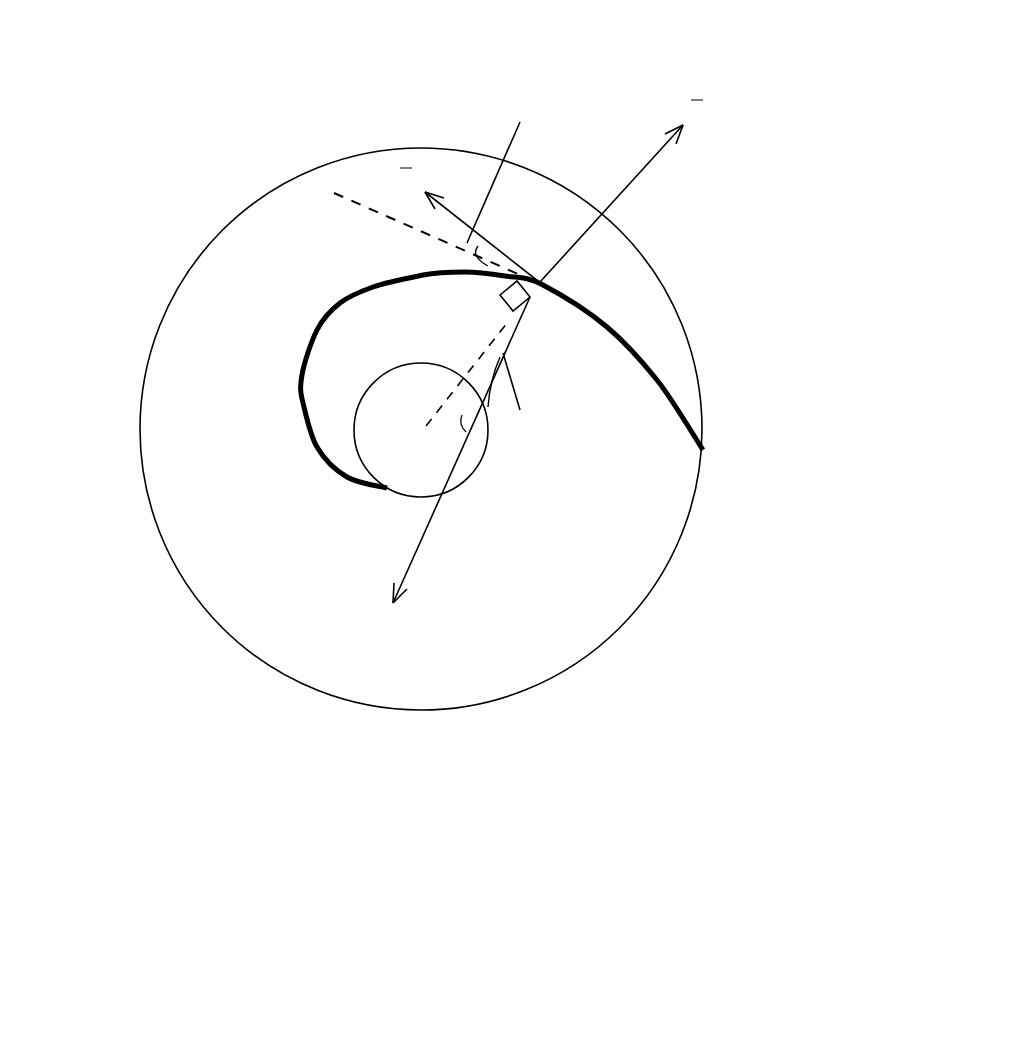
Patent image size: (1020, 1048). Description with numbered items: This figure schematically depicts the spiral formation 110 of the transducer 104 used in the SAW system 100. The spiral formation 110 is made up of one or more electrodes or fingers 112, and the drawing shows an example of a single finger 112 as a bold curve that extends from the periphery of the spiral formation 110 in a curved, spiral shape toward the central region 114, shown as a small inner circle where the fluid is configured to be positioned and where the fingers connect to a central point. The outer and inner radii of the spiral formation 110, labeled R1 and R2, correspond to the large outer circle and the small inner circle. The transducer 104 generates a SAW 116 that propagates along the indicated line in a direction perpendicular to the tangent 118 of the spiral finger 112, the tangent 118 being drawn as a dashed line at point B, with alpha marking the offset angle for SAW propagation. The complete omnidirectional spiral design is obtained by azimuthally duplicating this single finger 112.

The SAW system 100 is at (129, 163).
The transducer 104 is at (160, 326).
The spiral formation 110 is at (631, 314).
The finger 112 is at (670, 380).
The central region 114 is at (364, 468).
The SAW 116 is at (441, 554).
The tangent 118 is at (343, 179).